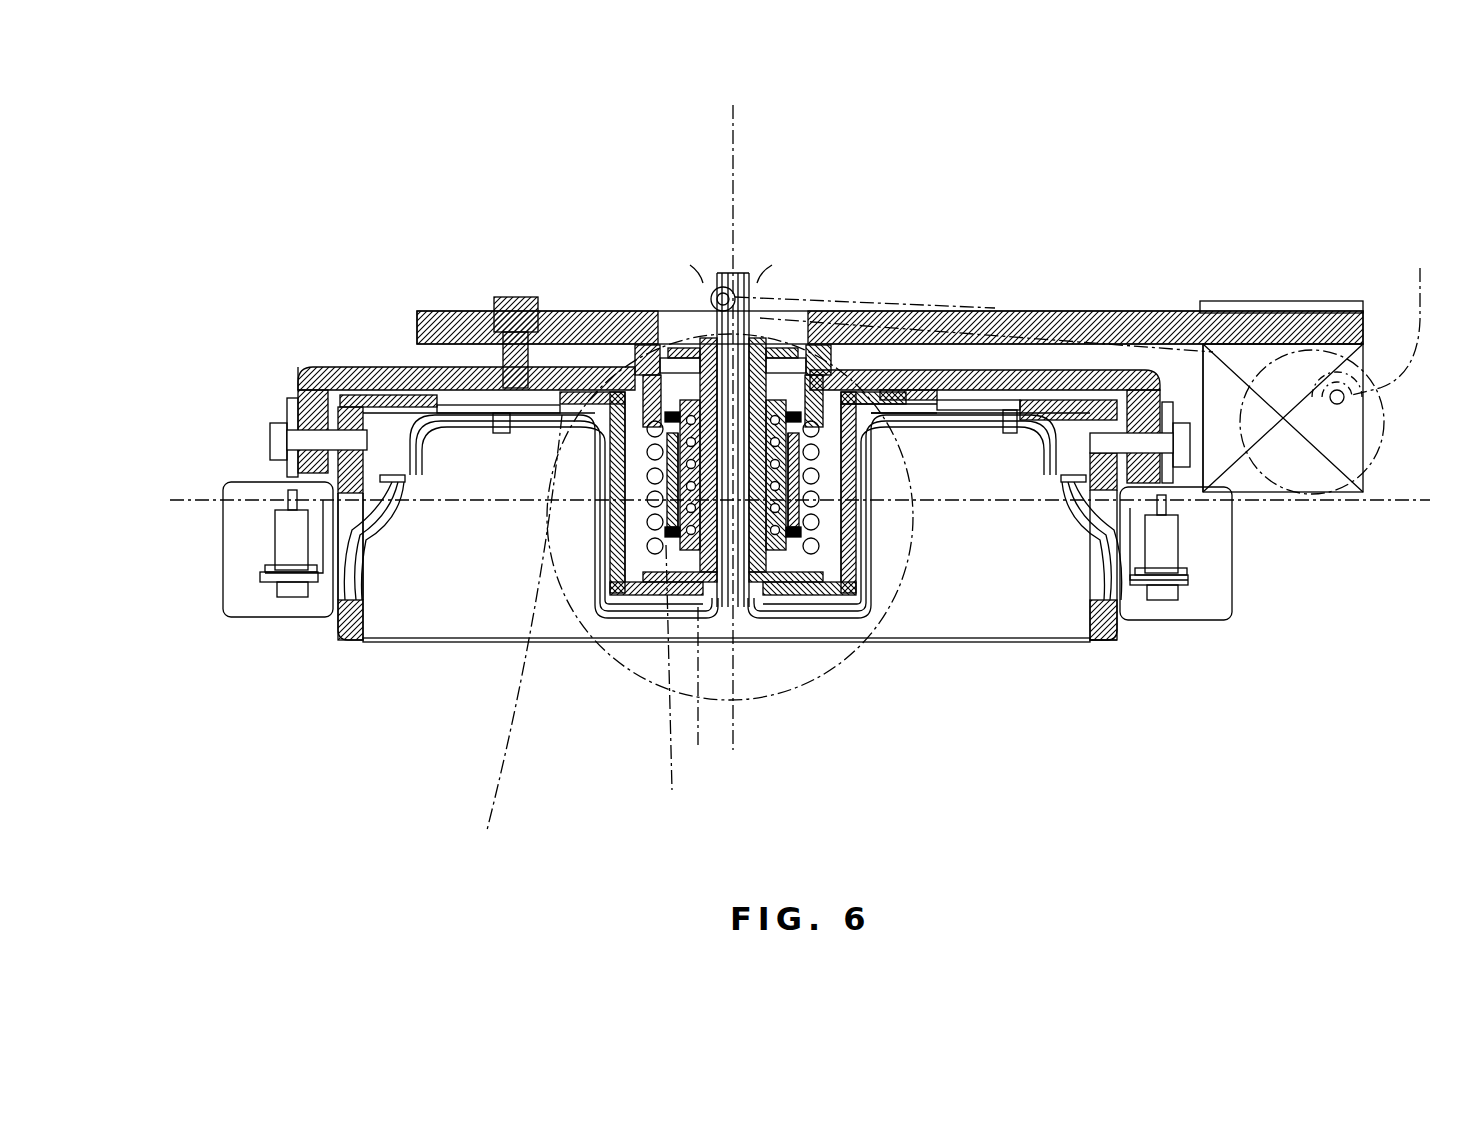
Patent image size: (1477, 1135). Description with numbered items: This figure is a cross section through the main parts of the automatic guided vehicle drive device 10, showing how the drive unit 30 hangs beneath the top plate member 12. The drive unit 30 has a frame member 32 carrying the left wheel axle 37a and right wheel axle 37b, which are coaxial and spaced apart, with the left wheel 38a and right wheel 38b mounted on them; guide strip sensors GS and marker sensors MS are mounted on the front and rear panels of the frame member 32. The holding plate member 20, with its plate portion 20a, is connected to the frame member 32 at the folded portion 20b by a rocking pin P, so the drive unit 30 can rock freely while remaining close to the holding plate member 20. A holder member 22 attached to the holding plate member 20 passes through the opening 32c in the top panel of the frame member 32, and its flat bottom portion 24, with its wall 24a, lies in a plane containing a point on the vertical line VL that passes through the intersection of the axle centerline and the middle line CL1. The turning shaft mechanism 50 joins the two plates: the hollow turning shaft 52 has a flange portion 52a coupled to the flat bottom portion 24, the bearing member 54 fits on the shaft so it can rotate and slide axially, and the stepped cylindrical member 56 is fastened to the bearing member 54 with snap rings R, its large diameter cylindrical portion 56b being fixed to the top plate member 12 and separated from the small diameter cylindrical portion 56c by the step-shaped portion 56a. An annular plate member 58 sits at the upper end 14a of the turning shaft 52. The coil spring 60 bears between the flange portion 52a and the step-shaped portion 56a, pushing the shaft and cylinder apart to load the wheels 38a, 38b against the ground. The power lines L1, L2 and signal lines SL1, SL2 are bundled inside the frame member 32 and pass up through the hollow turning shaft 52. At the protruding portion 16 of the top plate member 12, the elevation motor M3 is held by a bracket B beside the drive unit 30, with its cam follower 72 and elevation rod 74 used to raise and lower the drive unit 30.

The drive device 10 is at (1095, 162).
The top plate member 12 is at (452, 288).
The shaft end 14a is at (752, 295).
The protruding portion 16 is at (1333, 308).
The holding plate member 20 is at (378, 368).
The housing plate 20a is at (600, 372).
The folded portion 20b is at (300, 375).
The holder member 22 is at (595, 535).
The flat bottom portion 24 is at (640, 600).
The cup wall 24a is at (722, 620).
The drive unit 30 is at (1108, 654).
The frame member 32 is at (343, 628).
The opening 32c is at (465, 425).
The left wheel axle 37a is at (679, 688).
The right wheel axle 37b is at (679, 688).
The left wheel 38a is at (494, 646).
The right wheel 38b is at (494, 646).
The turning shaft mechanism 50 is at (835, 483).
The hollow turning shaft 52 is at (800, 530).
The flange portion 52a is at (805, 560).
The bearing member 54 is at (672, 483).
The stepped cylindrical member 56 is at (931, 255).
The step-shaped portion 56a is at (930, 289).
The large diameter cylindrical portion 56b is at (930, 289).
The small diameter cylindrical portion 56c is at (1050, 168).
The annular plate member 58 is at (645, 355).
The coil spring 60 is at (845, 545).
The cam follower 72 is at (1396, 312).
The elevation rod 74 is at (1207, 303).
The rocking pin P is at (285, 420).
The bracket B is at (1280, 300).
The snap ring R is at (552, 457).
The vertical line VL is at (735, 128).
The guide strip sensor GS is at (1325, 603).
The marker sensor MS is at (278, 553).
The elevation motor M3 is at (1358, 495).
The middle line CL1 is at (1263, 505).
The power line L1 is at (437, 557).
The power line L2 is at (1077, 552).
The signal line SL1 is at (437, 557).
The signal line SL2 is at (352, 582).